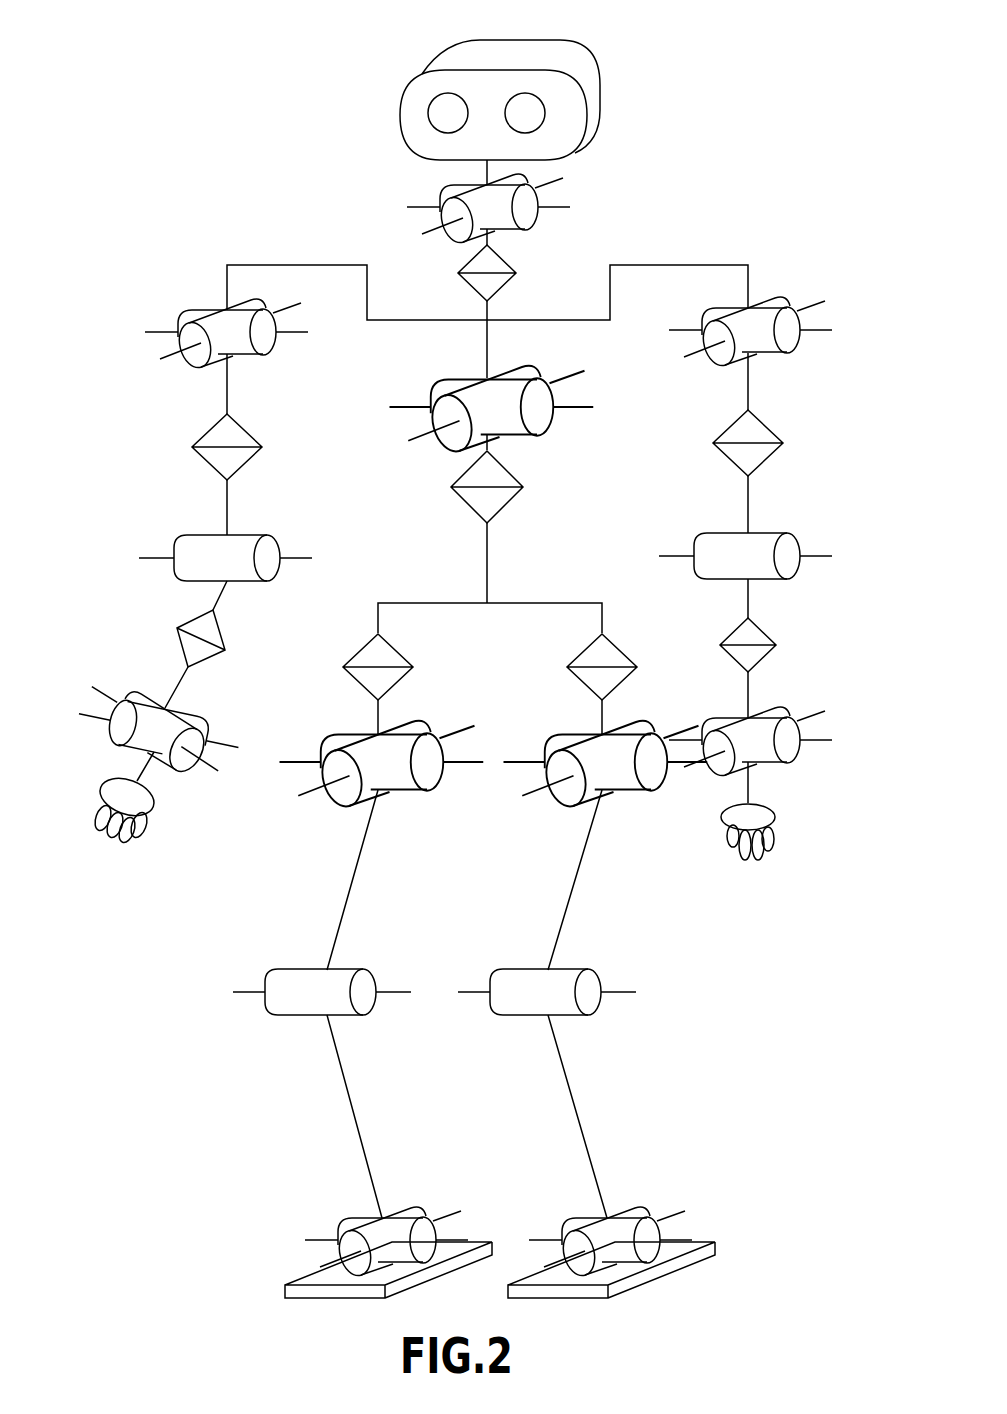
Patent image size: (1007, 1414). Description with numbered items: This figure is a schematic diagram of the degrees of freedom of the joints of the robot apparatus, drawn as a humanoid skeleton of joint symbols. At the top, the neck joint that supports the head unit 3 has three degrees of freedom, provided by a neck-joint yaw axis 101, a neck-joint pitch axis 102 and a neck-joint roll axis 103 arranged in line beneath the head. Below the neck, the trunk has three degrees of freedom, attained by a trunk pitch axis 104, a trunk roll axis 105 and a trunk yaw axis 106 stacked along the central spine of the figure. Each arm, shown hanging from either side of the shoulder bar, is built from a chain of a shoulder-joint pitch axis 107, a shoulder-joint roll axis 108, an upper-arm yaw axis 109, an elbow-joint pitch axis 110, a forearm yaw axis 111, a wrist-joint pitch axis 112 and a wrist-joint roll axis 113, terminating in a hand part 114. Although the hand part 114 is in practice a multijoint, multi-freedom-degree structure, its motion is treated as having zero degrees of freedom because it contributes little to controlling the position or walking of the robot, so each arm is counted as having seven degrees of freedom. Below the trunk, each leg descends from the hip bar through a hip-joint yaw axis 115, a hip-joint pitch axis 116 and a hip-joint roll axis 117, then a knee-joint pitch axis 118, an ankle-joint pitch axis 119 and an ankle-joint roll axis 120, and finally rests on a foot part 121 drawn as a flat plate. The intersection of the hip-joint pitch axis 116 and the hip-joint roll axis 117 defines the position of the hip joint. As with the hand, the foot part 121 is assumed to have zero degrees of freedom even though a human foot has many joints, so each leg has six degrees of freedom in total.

The head unit 3 is at (552, 62).
The neck-joint yaw axis 101 is at (518, 273).
The neck-joint pitch axis 102 is at (530, 197).
The neck-joint roll axis 103 is at (520, 182).
The trunk pitch axis 104 is at (552, 393).
The trunk roll axis 105 is at (541, 368).
The trunk yaw axis 106 is at (525, 487).
The shoulder-joint pitch axis 107 is at (183, 313).
The shoulder-joint roll axis 108 is at (190, 364).
The upper-arm yaw axis 109 is at (194, 447).
The elbow-joint pitch axis 110 is at (180, 543).
The forearm yaw axis 111 is at (177, 628).
The wrist-joint pitch axis 112 is at (118, 700).
The wrist-joint roll axis 113 is at (108, 736).
The hand part 114 is at (112, 792).
The hip-joint yaw axis 115 is at (639, 667).
The hip-joint pitch axis 116 is at (650, 790).
The hip-joint roll axis 117 is at (565, 790).
The knee-joint pitch axis 118 is at (592, 1005).
The ankle-joint pitch axis 119 is at (645, 1232).
The ankle-joint roll axis 120 is at (637, 1213).
The foot part 121 is at (318, 1277).